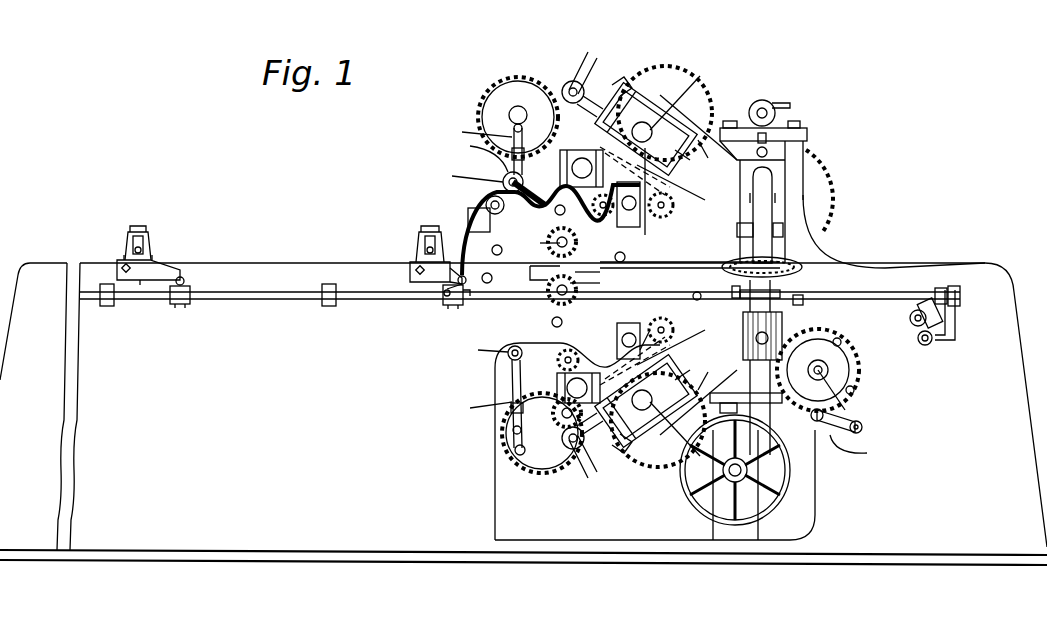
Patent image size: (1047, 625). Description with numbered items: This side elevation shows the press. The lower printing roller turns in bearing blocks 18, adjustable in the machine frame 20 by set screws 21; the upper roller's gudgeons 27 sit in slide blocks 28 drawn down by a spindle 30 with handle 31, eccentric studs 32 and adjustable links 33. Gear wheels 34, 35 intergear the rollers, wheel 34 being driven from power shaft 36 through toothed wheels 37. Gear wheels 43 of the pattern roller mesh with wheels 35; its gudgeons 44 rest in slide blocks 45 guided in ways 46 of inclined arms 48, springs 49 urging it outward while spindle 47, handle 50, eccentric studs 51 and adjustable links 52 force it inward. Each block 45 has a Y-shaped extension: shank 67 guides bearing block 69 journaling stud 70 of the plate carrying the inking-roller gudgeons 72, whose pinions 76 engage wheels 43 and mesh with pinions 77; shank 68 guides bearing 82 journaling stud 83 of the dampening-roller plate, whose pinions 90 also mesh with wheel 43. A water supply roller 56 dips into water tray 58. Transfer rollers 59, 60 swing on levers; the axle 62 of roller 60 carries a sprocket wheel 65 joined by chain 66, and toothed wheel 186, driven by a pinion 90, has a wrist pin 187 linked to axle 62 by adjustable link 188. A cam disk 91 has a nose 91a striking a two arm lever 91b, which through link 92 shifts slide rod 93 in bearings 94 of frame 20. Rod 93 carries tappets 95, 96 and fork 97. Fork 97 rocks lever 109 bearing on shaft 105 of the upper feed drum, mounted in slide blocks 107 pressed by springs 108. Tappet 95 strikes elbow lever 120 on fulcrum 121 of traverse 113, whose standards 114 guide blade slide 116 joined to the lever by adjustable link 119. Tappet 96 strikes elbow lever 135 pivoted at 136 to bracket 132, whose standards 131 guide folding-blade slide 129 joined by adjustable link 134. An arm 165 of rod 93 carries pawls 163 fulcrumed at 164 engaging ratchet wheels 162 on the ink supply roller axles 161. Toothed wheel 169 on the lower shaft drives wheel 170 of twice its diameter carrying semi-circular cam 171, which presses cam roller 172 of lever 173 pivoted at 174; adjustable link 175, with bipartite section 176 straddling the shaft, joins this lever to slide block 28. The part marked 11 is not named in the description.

The bracket 11 is at (785, 305).
The bearing blocks 18 is at (750, 368).
The machine frame 20 is at (523, 375).
The lower set screws 21 is at (783, 396).
The gudgeons 27 is at (775, 200).
The slide blocks 28 is at (785, 215).
The horizontal spindle 30 is at (766, 104).
The handle 31 is at (792, 105).
The eccentric studs 32 is at (790, 130).
The adjustable links 33 is at (770, 145).
The gear wheel 34 is at (805, 270).
The gear wheel 35 is at (815, 172).
The power shaft 36 is at (748, 475).
The toothed wheels 37 is at (712, 490).
The gear wheels 43 is at (680, 78).
The gudgeons 44 is at (648, 125).
The slide blocks 45 is at (678, 264).
The ways 46 is at (712, 120).
The spindle 47 is at (568, 80).
The inclined arms 48 is at (693, 265).
The springs 49 is at (683, 265).
The handle 50 is at (591, 261).
The eccentric studs 51 is at (592, 86).
The adjustable links 52 is at (632, 490).
The water supply roller 56 is at (486, 200).
The water tray 58 is at (468, 214).
The transfer roller 59 is at (621, 255).
The transfer roller 60 is at (503, 178).
The axle 62 is at (482, 262).
The sprocket wheels 65 is at (528, 205).
The chain 66 is at (474, 156).
The shank 67 is at (682, 265).
The shank 68 is at (556, 236).
The adjustable bearing block 69 is at (665, 282).
The stud 70 is at (650, 228).
The gudgeons 72 is at (695, 230).
The pinions 76 is at (695, 240).
The pinions 77 is at (690, 268).
The adjustable bearing 82 is at (625, 182).
The stud 83 is at (527, 122).
The pinions 90 is at (600, 215).
The cam disk 91 is at (818, 370).
The nose 91a is at (743, 345).
The two arm lever 91b is at (805, 300).
The link 92 is at (698, 292).
The slide rod 93 is at (360, 300).
The bearings 94 is at (107, 306).
The tappet 95 is at (452, 305).
The tappet 96 is at (190, 300).
The fork 97 is at (962, 292).
The shaft 105 is at (910, 318).
The slide blocks 107 is at (957, 330).
The springs 108 is at (942, 312).
The two arm lever 109 is at (922, 346).
The traverse 113 is at (416, 258).
The standards 114 is at (421, 230).
The slide 116 is at (420, 236).
The adjustable link 119 is at (445, 262).
The elbow lever 120 is at (480, 270).
The fulcrum 121 is at (465, 282).
The slide 129 is at (150, 240).
The standards 131 is at (127, 240).
The brackets 132 is at (165, 268).
The adjustable link 134 is at (126, 255).
The elbow lever 135 is at (165, 280).
The pivot 136 is at (186, 281).
The axles 161 is at (548, 243).
The ratchet wheels 162 is at (531, 274).
The pawls 163 is at (589, 264).
The fulcrum 164 is at (576, 285).
The arm 165 is at (500, 296).
The toothed wheel 169 is at (842, 380).
The toothed wheel 170 is at (856, 392).
The semi-circular cam 171 is at (852, 352).
The cam roller 172 is at (840, 430).
The lever 173 is at (859, 450).
The pivot 174 is at (864, 430).
The adjustable link 175 is at (815, 240).
The bipartite section 176 is at (900, 265).
The toothed wheel 186 is at (518, 78).
The wrist pin 187 is at (512, 130).
The adjustable link 188 is at (453, 270).